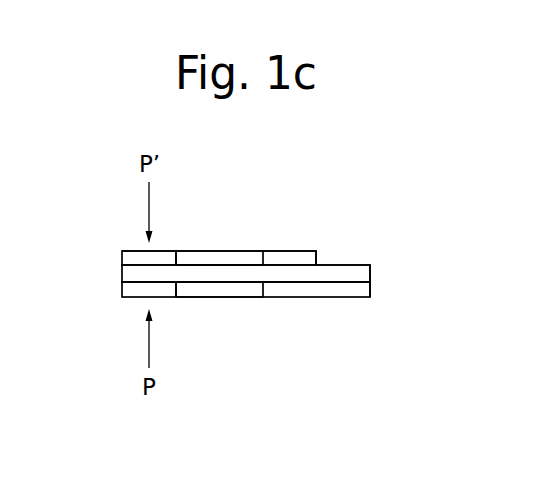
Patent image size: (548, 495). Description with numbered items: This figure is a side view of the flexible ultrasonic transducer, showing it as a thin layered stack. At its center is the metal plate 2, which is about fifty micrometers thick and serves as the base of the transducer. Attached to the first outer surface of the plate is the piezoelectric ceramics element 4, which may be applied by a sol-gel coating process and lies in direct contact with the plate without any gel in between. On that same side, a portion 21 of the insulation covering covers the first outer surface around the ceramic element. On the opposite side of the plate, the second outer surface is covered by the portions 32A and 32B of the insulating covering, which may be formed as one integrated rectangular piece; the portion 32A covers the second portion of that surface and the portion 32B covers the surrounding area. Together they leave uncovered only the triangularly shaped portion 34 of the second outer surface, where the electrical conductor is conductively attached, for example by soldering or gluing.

The metal plate 2 is at (130, 274).
The piezoelectric ceramics element 4 is at (247, 292).
The portion of the insulation covering 21 is at (131, 292).
The portion of the insulating covering 32A is at (224, 251).
The portion of the insulating covering 32B is at (131, 251).
The triangularly shaped portion of the second outer surface 34 is at (352, 265).